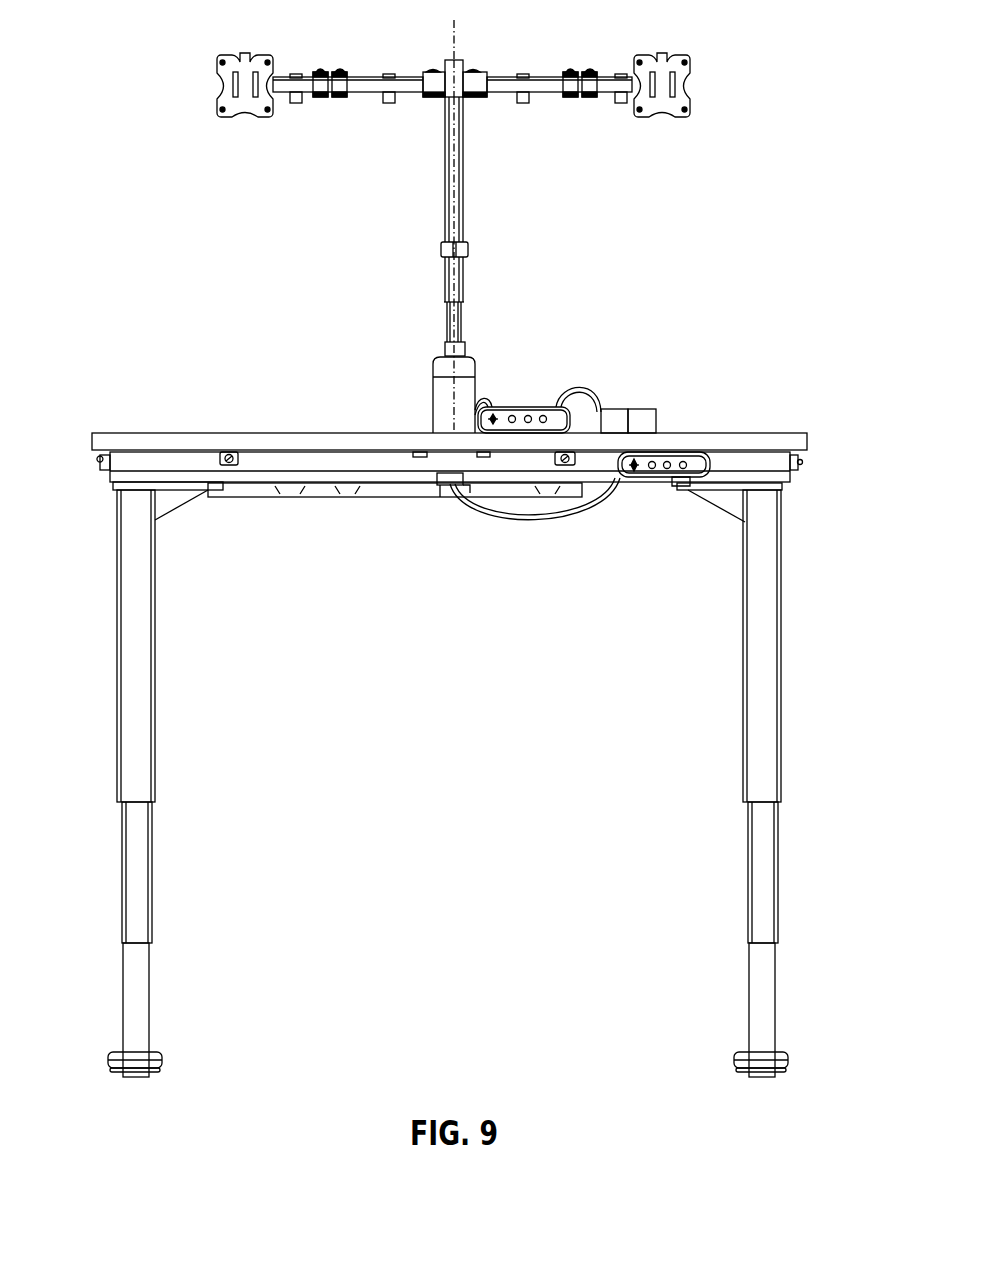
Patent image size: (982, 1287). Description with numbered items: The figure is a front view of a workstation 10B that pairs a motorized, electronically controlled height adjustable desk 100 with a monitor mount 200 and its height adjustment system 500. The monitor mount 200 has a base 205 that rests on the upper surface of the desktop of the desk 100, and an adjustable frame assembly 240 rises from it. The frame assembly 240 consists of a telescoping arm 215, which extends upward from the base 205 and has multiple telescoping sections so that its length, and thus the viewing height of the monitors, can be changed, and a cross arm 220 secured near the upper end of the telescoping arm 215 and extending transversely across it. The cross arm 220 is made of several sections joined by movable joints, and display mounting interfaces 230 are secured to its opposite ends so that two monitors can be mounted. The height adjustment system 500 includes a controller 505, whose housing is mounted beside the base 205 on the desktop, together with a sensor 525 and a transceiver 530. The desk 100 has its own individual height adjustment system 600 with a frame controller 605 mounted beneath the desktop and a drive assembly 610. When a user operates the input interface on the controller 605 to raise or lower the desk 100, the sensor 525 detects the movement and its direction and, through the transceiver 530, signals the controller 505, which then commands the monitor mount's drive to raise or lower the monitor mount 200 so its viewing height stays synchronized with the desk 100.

The workstation 10B is at (173, 230).
The desk 100 is at (160, 410).
The monitor mount 200 is at (403, 65).
The base 205 is at (432, 406).
The telescoping arm 215 is at (445, 220).
The cross arm 220 is at (537, 94).
The display mounting interfaces 230 is at (247, 117).
The adjustable frame assembly 240 is at (403, 117).
The height adjustment system 500 is at (525, 355).
The controller 505 is at (512, 400).
The sensor 525 is at (642, 410).
The transceiver 530 is at (615, 410).
The height adjustment system 600 is at (633, 487).
The controller 605 is at (698, 463).
The drive assembly 610 is at (440, 487).